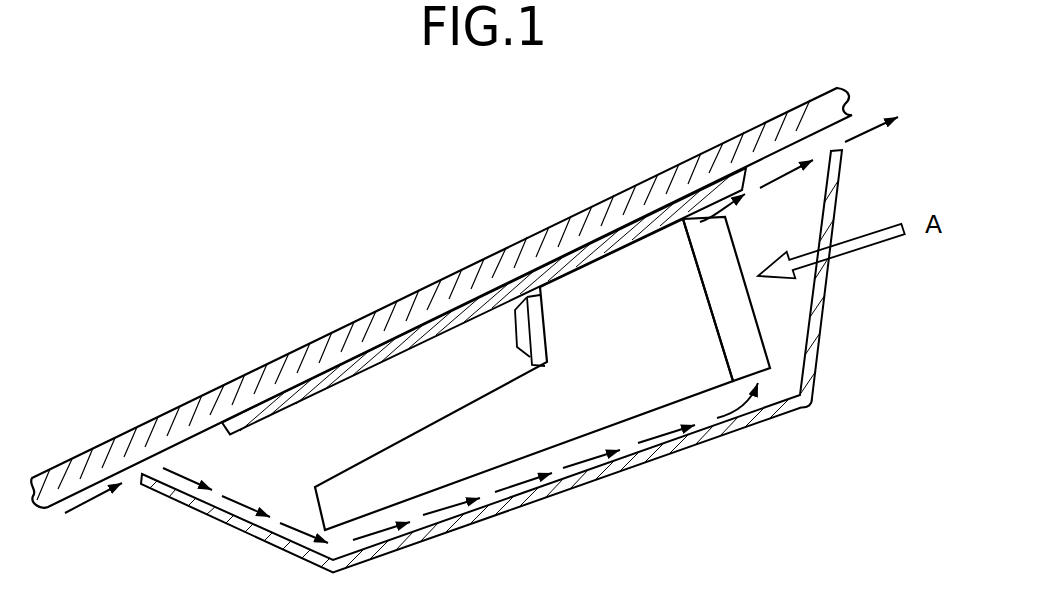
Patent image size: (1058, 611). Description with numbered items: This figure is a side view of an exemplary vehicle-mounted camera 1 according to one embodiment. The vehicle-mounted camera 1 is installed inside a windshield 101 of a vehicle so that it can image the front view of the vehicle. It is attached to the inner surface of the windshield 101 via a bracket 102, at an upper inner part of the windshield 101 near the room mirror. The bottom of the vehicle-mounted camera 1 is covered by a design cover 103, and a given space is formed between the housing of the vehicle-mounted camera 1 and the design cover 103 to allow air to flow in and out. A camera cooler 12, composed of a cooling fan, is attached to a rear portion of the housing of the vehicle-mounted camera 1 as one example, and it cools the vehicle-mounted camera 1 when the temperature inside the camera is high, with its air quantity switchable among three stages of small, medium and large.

The vehicle-mounted camera 1 is at (590, 412).
The camera cooler 12 is at (752, 352).
The windshield 101 is at (423, 302).
The bracket 102 is at (320, 380).
The design cover 103 is at (490, 512).